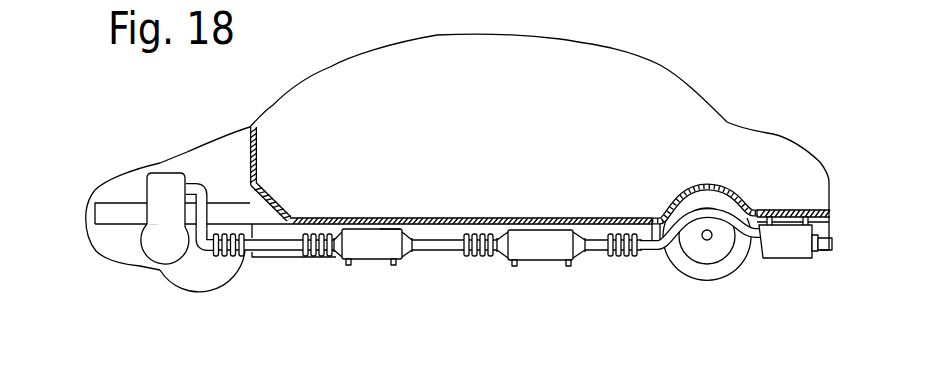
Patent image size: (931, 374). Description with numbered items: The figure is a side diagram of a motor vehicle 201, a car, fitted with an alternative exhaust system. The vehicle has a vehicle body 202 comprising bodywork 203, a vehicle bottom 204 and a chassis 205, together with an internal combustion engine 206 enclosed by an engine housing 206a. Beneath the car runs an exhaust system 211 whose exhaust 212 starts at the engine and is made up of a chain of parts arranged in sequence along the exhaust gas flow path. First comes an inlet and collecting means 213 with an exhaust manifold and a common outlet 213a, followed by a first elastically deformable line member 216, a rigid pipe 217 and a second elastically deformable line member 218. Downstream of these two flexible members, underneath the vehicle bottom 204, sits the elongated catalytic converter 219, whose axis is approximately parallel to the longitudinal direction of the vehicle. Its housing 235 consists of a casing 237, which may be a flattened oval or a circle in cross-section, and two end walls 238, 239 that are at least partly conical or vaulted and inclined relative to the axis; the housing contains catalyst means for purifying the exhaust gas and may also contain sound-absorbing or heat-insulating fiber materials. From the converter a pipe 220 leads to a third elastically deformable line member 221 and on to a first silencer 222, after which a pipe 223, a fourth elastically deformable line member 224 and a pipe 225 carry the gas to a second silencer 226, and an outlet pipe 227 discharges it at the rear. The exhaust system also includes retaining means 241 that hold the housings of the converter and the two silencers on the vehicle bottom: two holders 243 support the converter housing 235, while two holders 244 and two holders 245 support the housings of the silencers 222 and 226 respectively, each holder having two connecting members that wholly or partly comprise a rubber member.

The motor vehicle 201 is at (436, 146).
The vehicle body 202 is at (272, 101).
The bodywork 203 is at (688, 80).
The vehicle bottom 204 is at (499, 216).
The chassis 205 is at (236, 202).
The internal combustion engine 206 is at (146, 188).
The engine housing 206a is at (170, 173).
The exhaust system 211 is at (826, 232).
The exhaust 212 is at (181, 218).
The inlet and collecting means 213 is at (173, 204).
The common outlet 213a is at (196, 277).
The first elastically deformable line member 216 is at (241, 258).
The rigid pipe 217 is at (280, 251).
The second elastically deformable line member 218 is at (314, 257).
The catalytic converter 219 is at (372, 257).
The pipe 220 is at (436, 252).
The third elastically deformable line member 221 is at (490, 258).
The first silencer 222 is at (544, 262).
The pipe 223 is at (595, 252).
The fourth elastically deformable line member 224 is at (628, 258).
The pipe 225 is at (742, 262).
The second silencer 226 is at (783, 260).
The outlet pipe 227 is at (824, 252).
The housing 235 is at (362, 229).
The casing 237 is at (386, 228).
The end wall 238 is at (339, 232).
The end wall 239 is at (403, 234).
The retaining means 241 is at (824, 220).
The holders 243 is at (350, 266).
The holders 244 is at (517, 267).
The holders 245 is at (805, 216).